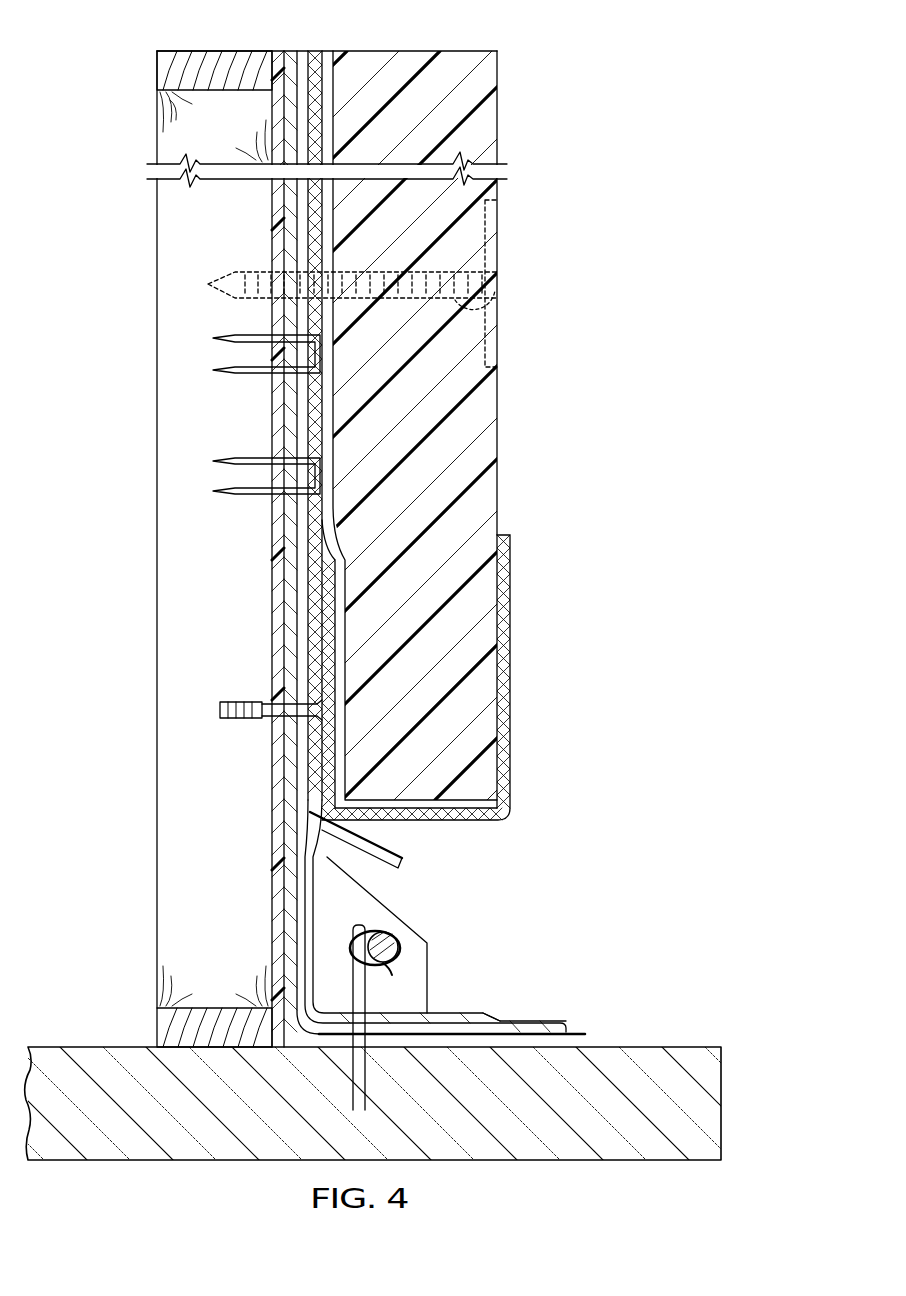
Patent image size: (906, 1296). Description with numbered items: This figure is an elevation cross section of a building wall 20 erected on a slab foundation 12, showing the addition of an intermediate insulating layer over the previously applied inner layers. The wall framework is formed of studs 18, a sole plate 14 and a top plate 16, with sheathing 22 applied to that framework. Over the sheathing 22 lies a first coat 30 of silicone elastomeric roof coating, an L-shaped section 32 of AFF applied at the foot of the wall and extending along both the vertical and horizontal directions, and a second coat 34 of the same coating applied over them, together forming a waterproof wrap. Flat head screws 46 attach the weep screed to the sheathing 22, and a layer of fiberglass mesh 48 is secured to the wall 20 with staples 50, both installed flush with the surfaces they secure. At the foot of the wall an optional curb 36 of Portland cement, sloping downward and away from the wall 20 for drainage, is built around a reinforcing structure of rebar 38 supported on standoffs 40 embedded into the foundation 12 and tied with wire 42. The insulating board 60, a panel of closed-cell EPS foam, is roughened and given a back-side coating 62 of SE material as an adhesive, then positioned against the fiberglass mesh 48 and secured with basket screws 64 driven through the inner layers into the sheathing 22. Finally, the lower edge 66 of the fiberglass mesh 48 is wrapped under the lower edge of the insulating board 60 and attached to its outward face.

The slab foundation 12 is at (97, 1052).
The sole plate 14 is at (215, 1010).
The top plate 16 is at (212, 52).
The studs 18 is at (157, 316).
The wall 20 is at (101, 55).
The sheathing 22 is at (272, 520).
The coat of SE roof coating 30 is at (290, 565).
The L-shaped section of AFF 32 is at (298, 960).
The second coat of SE roof coating 34 is at (300, 600).
The curb 36 is at (432, 988).
The reinforcing bar 38 is at (399, 958).
The standoffs 40 is at (370, 998).
The wire 42 is at (378, 931).
The flat head screws 46 is at (245, 720).
The fiberglass mesh 48 is at (486, 822).
The staples 50 is at (268, 374).
The insulating board 60 is at (497, 438).
The back-side coating 62 is at (333, 412).
The basket screws 64 is at (497, 312).
The lower edge of the fiberglass mesh 66 is at (510, 640).